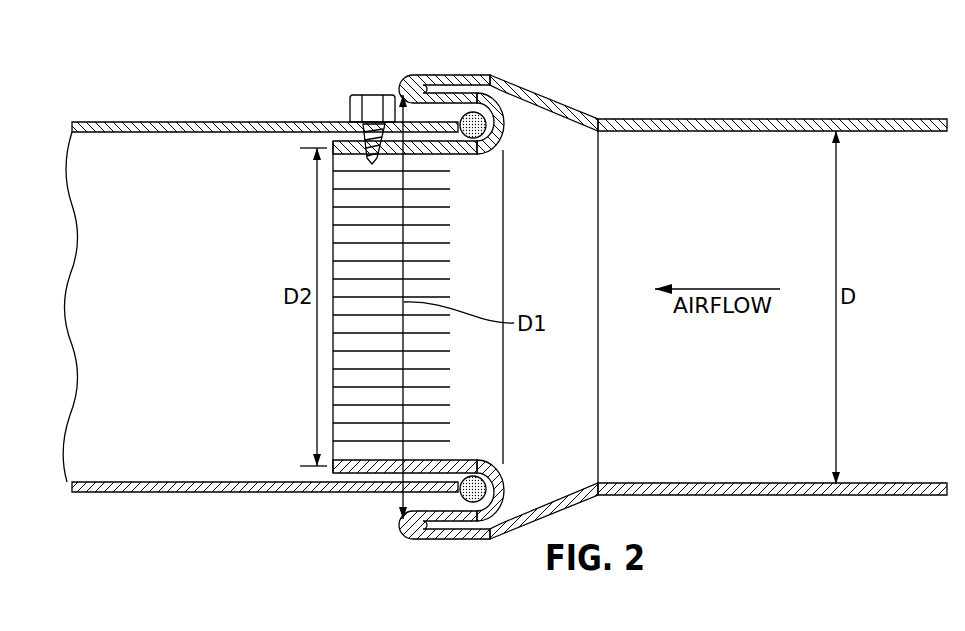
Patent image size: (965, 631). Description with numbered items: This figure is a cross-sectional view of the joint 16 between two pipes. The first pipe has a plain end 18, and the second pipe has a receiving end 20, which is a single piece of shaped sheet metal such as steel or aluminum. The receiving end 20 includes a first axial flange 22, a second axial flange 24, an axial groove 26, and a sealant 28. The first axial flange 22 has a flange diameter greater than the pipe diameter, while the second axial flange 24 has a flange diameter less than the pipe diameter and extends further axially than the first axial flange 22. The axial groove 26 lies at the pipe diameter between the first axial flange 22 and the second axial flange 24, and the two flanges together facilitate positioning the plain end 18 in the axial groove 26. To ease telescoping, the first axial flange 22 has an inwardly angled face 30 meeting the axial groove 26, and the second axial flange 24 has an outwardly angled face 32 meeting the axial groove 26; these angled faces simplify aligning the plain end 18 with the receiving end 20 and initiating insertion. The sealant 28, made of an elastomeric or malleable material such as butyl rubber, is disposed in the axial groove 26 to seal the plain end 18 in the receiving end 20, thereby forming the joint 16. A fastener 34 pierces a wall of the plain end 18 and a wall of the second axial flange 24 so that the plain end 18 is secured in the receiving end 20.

The joint 16 is at (436, 66).
The plain end 18 is at (320, 115).
The receiving end 20 is at (538, 73).
The first axial flange 22 is at (406, 84).
The second axial flange 24 is at (300, 148).
The axial groove 26 is at (500, 112).
The sealant 28 is at (478, 94).
The inwardly angled face 30 is at (468, 122).
The outwardly angled face 32 is at (447, 155).
The fastener 34 is at (355, 96).